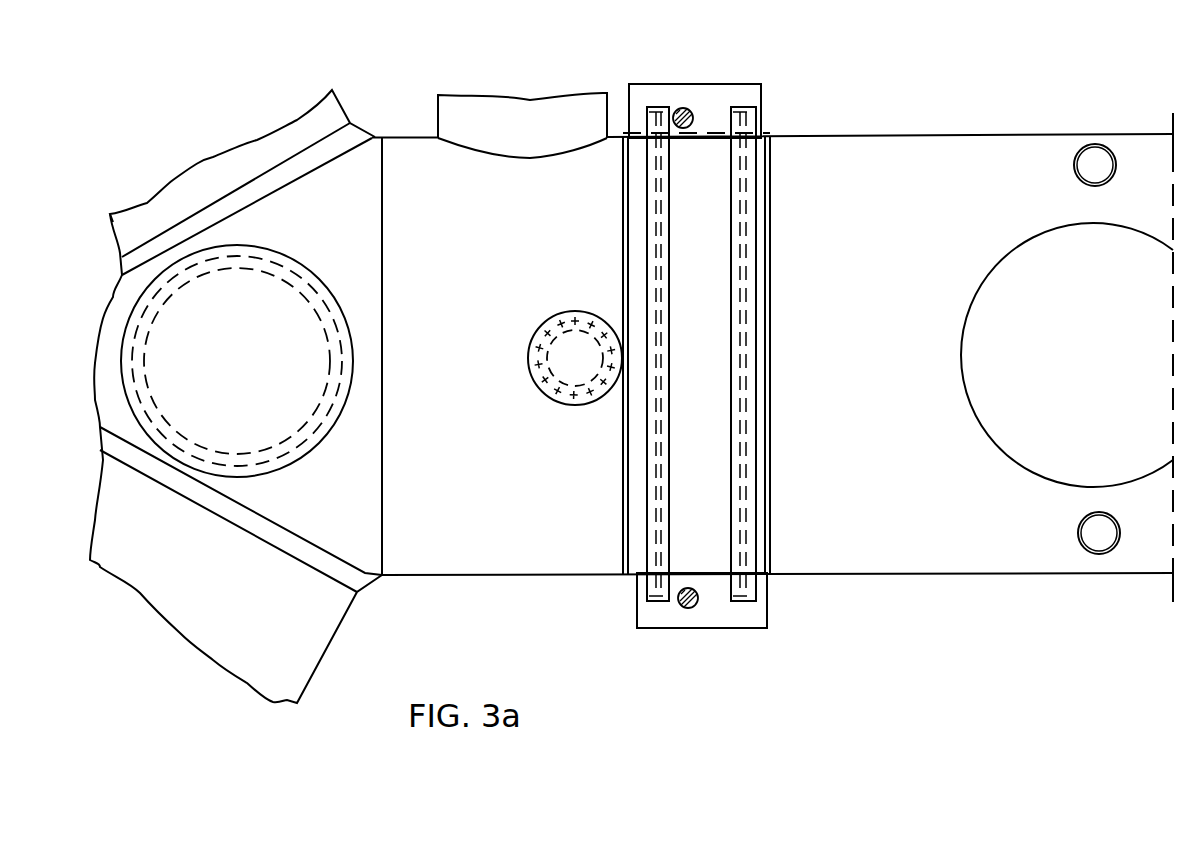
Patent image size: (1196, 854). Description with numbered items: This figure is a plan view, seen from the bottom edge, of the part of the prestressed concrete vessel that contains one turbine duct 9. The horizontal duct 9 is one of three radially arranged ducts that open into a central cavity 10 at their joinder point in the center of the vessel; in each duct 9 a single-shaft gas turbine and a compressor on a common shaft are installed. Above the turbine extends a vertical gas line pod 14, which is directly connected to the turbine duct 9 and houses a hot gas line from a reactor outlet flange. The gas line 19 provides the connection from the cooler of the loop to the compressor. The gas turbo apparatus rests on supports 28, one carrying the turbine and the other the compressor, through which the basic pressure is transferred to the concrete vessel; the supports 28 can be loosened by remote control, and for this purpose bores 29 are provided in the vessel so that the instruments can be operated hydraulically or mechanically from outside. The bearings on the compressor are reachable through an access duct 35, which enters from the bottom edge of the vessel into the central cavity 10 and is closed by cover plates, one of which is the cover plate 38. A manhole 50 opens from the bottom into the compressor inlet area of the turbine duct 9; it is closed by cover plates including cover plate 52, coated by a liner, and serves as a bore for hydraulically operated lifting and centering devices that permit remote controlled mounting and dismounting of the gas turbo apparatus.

The horizontal duct 9 is at (853, 178).
The cavity 10 is at (330, 187).
The gas line pod 14 is at (1007, 257).
The gas line 19 is at (543, 125).
The support 28 is at (730, 612).
The bore 29 is at (690, 607).
The access duct 35 is at (305, 297).
The cover plate 38 is at (350, 335).
The manhole 50 is at (550, 393).
The cover plate 52 is at (587, 400).